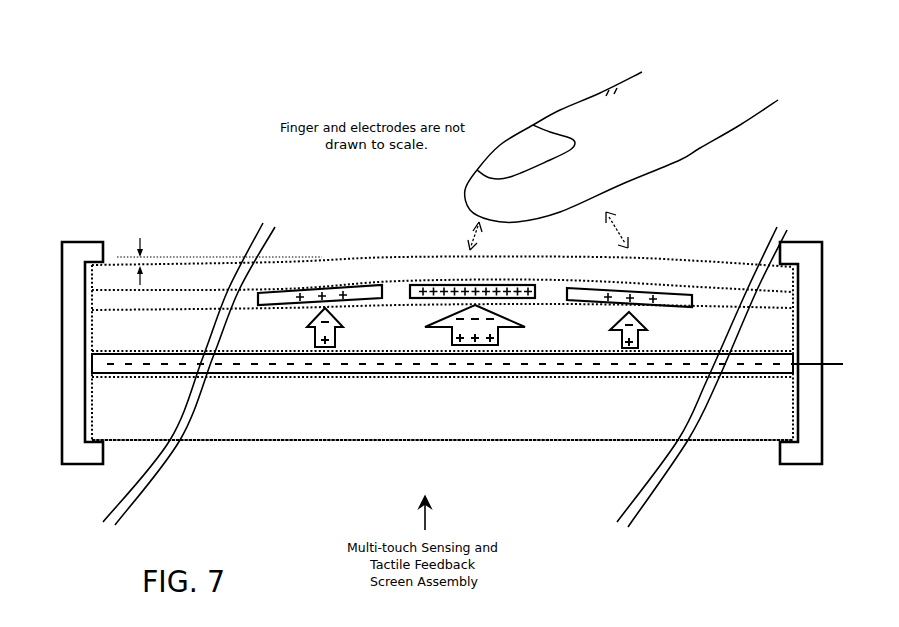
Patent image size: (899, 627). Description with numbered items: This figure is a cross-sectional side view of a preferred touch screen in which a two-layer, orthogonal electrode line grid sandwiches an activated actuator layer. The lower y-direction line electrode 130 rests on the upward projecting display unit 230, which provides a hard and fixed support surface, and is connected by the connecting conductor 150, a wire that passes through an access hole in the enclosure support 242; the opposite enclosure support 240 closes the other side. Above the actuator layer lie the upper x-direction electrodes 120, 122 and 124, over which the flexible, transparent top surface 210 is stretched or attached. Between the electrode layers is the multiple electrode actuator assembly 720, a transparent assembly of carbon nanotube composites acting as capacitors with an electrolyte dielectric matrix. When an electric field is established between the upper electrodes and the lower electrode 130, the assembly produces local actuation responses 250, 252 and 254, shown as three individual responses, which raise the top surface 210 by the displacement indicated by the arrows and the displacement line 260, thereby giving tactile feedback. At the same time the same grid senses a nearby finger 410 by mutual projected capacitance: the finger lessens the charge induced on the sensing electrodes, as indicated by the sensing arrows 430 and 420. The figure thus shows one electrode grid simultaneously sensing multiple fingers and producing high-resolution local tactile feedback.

The upper x-direction electrode 120 is at (692, 296).
The upper x-direction electrode 122 is at (540, 285).
The upper x-direction electrode 124 is at (388, 290).
The lower y-direction line electrode 130 is at (655, 372).
The connecting conductor 150 is at (833, 362).
The flexible transparent top surface 210 is at (305, 280).
The display unit 230 is at (490, 393).
The touch screen and display enclosure support 240 is at (88, 252).
The touch screen and display enclosure support 242 is at (810, 248).
The local actuation response 250 is at (498, 341).
The local actuator response 252 is at (343, 341).
The local actuation response 254 is at (647, 341).
The displacement line 260 is at (175, 258).
The finger 410 is at (700, 148).
The sensing arrow 420 is at (480, 242).
The sensing arrow 430 is at (622, 231).
The multiple electrode actuator assembly 720 is at (268, 332).